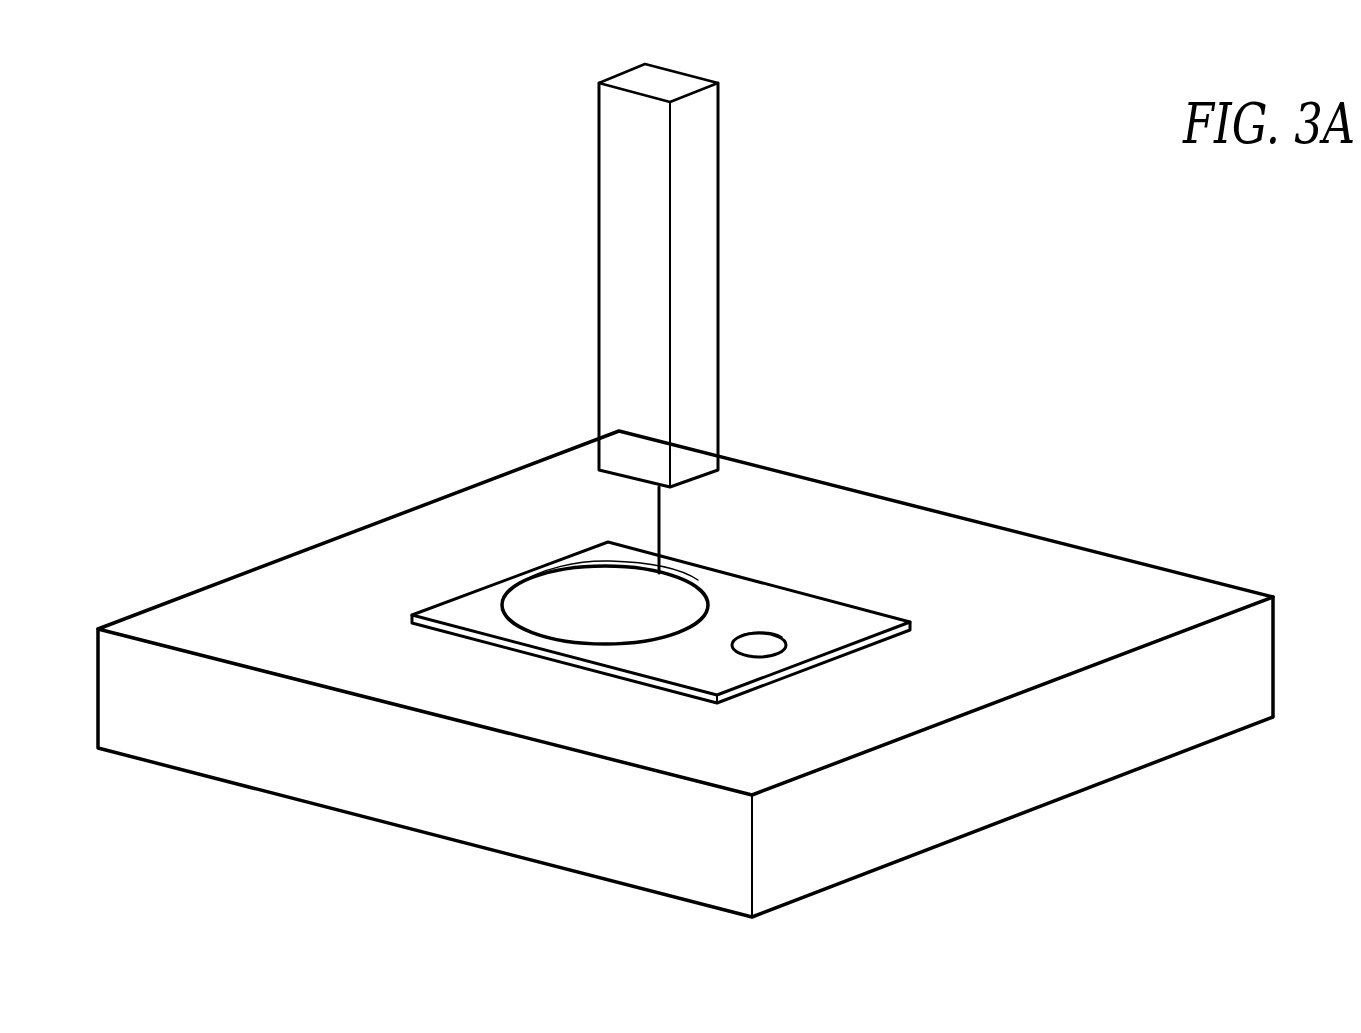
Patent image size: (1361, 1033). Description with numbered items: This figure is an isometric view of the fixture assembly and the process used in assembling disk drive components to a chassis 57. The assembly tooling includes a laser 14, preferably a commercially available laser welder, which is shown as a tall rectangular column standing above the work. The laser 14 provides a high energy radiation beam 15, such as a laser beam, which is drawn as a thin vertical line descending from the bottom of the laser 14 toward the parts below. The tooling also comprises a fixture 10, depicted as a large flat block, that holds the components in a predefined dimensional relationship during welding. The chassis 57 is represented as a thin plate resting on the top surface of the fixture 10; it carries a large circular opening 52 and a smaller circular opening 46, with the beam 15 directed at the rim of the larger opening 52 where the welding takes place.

The fixture 10 is at (1097, 602).
The laser 14 is at (698, 168).
The high energy radiation beam 15 is at (655, 572).
The large aperture 52 is at (698, 585).
The small aperture 46 is at (770, 630).
The chassis 57 is at (837, 625).